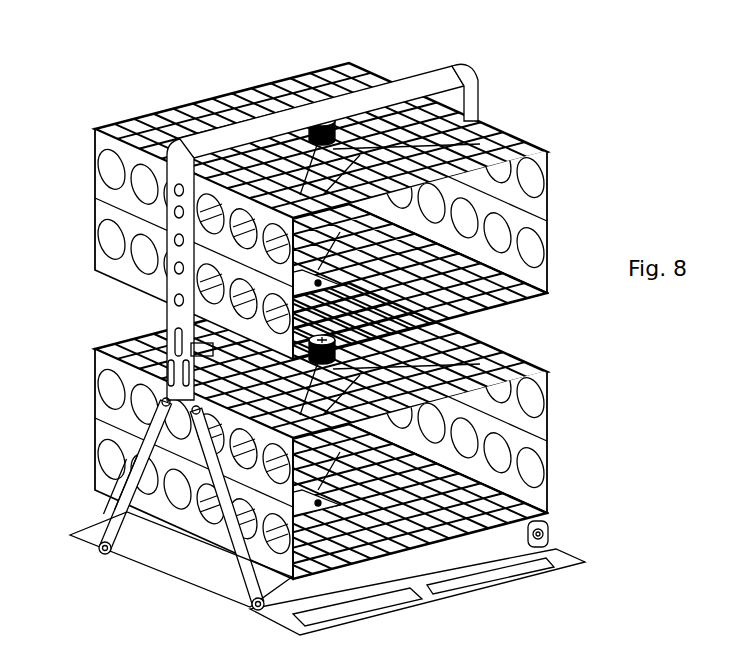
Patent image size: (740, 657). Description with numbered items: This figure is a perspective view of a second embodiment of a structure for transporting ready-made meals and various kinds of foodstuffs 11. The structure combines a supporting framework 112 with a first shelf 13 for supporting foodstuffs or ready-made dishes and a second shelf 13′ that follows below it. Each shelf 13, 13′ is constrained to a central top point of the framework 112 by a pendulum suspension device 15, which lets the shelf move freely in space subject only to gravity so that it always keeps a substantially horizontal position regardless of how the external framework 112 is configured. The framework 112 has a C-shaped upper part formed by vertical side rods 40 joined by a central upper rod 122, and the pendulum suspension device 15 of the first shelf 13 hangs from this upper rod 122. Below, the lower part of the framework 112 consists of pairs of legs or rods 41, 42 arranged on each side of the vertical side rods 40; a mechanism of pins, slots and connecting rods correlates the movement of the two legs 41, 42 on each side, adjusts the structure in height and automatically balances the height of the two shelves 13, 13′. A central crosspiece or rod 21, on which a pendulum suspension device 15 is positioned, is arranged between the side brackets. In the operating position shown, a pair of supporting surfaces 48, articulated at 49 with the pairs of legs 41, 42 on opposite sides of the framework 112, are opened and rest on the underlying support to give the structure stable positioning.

The structure for transporting foodstuffs 11 is at (417, 317).
The shelf 13 is at (538, 147).
The second shelf 13′ is at (551, 438).
The pendulum suspension device 15 is at (332, 117).
The central crosspiece 21 is at (218, 350).
The vertical side rods 40 is at (478, 106).
The leg 41 is at (148, 428).
The leg 42 is at (238, 564).
The supporting surfaces 48 is at (78, 537).
The articulation 49 is at (104, 558).
The supporting framework 112 is at (124, 503).
The central upper rod 122 is at (416, 80).